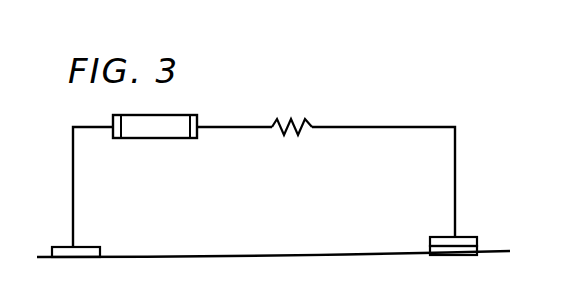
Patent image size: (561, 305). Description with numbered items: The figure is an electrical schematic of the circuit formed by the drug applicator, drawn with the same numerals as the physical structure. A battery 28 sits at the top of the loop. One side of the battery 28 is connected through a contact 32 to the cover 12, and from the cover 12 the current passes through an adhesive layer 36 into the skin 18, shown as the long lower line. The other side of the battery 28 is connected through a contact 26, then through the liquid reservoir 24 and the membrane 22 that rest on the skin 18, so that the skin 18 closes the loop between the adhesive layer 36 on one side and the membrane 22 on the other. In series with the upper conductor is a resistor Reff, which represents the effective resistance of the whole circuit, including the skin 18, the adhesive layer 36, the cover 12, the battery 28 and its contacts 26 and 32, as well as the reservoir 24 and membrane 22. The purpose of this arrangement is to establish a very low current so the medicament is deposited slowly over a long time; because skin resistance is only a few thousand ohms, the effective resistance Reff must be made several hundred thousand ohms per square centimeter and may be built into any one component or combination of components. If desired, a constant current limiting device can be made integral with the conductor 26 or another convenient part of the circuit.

The cover 12 is at (73, 193).
The skin 18 is at (231, 255).
The membrane 22 is at (430, 253).
The liquid reservoir 24 is at (463, 237).
The contact 26 is at (200, 122).
The battery 28 is at (152, 115).
The contact 32 is at (113, 118).
The adhesive layer 36 is at (90, 247).
The effective resistance Reff is at (296, 112).